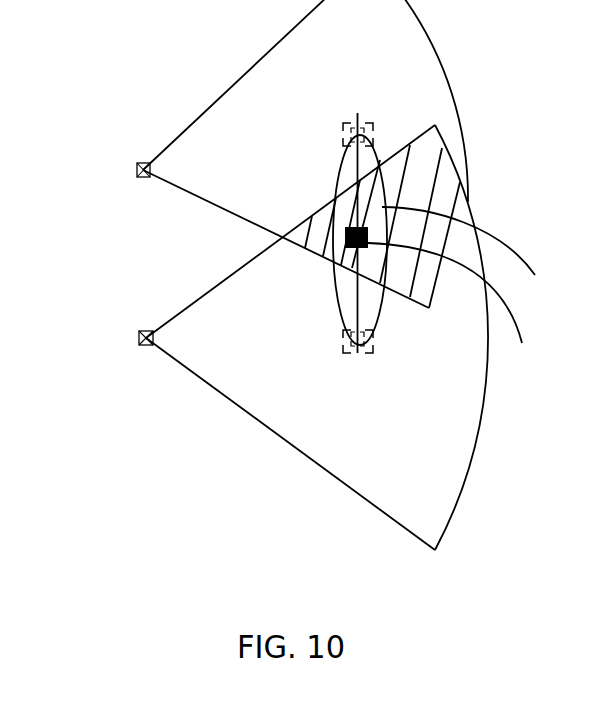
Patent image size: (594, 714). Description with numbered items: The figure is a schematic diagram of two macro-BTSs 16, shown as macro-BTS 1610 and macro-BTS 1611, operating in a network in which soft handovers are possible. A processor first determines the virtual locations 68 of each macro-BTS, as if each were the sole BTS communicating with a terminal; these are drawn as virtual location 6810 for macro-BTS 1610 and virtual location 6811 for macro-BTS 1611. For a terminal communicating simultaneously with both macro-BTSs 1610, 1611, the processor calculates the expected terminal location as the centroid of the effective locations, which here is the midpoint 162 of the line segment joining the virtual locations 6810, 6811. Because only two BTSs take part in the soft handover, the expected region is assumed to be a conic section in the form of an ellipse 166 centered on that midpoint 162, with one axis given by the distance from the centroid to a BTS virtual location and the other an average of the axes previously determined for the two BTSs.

The macro-BTS 16 is at (282, 275).
The macro-BTS 1611 is at (137, 171).
The macro-BTS 1610 is at (141, 333).
The virtual location 68 is at (392, 231).
The virtual location 6811 is at (357, 118).
The virtual location 6810 is at (357, 353).
The ellipse 166 is at (478, 257).
The midpoint 162 is at (462, 310).